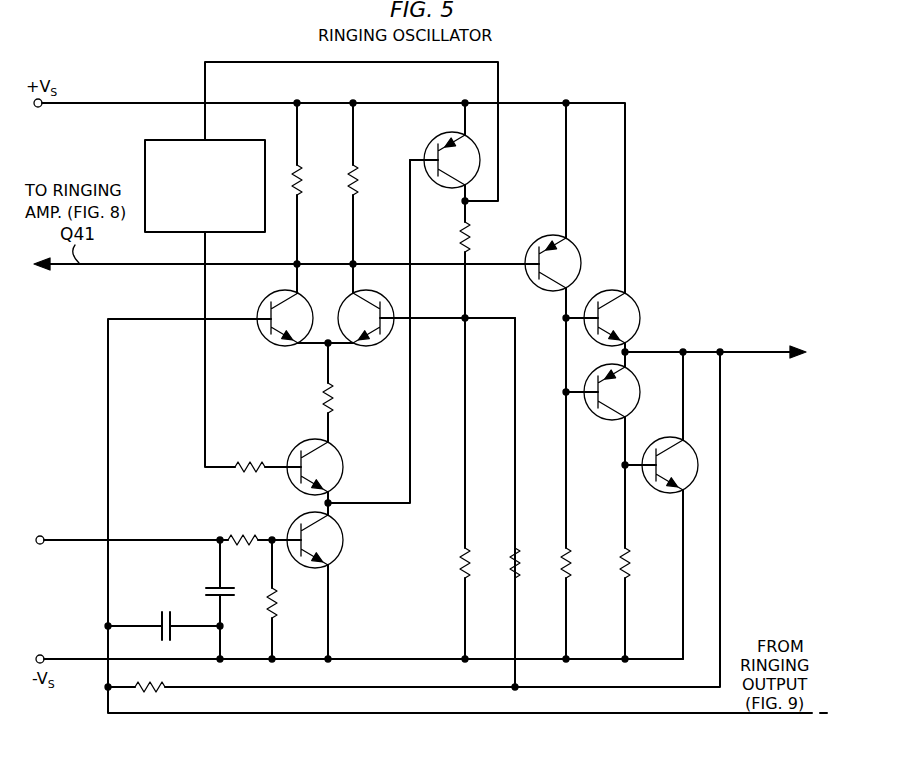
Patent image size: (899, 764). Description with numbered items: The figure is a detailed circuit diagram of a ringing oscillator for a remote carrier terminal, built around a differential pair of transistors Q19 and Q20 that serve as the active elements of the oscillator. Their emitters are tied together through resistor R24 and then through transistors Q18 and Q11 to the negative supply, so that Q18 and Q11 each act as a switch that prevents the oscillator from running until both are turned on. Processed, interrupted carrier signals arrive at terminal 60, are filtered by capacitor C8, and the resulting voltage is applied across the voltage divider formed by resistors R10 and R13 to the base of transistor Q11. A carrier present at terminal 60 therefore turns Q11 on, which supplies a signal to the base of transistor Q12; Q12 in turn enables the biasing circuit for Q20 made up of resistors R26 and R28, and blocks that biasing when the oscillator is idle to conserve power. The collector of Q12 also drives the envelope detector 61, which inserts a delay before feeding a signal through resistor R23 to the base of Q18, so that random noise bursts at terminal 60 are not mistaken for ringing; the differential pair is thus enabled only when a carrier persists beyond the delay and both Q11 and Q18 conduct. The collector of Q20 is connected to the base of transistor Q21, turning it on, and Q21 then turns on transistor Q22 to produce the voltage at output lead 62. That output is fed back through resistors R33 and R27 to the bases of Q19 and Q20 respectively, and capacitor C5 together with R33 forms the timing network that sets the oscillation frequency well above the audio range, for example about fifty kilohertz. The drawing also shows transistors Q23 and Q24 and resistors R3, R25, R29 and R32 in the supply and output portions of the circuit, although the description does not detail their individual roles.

The terminal 60 is at (42, 546).
The envelope detector 61 is at (236, 140).
The output lead 62 is at (734, 350).
The transistor Q11 is at (344, 534).
The transistor Q12 is at (437, 135).
The transistor Q18 is at (338, 453).
The transistor Q19 is at (268, 343).
The transistor Q20 is at (366, 345).
The transistor Q21 is at (574, 257).
The transistor Q22 is at (636, 300).
The transistor Q23 is at (601, 420).
The transistor Q24 is at (664, 494).
The resistor R3 is at (303, 180).
The resistor R10 is at (250, 529).
The resistor R13 is at (292, 599).
The resistor R23 is at (268, 454).
The resistor R24 is at (349, 392).
The resistor R25 is at (359, 180).
The resistor R26 is at (484, 259).
The resistor R27 is at (508, 570).
The resistor R28 is at (459, 570).
The resistor R29 is at (559, 570).
The resistor R32 is at (618, 570).
The resistor R33 is at (148, 697).
The capacitor C5 is at (164, 616).
The capacitor C8 is at (232, 594).